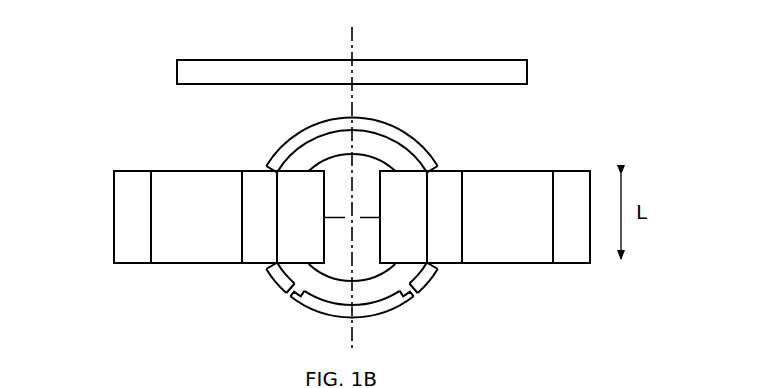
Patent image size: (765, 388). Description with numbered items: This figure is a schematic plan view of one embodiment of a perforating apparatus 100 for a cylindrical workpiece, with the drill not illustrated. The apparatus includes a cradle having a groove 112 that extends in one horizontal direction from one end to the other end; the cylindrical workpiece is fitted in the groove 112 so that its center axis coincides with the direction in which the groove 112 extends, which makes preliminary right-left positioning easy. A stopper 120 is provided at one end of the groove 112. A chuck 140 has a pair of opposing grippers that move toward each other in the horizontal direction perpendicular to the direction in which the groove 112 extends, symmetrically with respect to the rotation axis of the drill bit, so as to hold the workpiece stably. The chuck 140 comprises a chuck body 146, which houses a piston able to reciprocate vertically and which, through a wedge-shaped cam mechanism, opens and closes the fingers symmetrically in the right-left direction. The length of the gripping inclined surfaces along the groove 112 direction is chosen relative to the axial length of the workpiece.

The perforating apparatus 100 is at (114, 58).
The stopper 120 is at (527, 67).
The chuck 140 is at (135, 141).
The groove 112 is at (408, 161).
The chuck body 146 is at (429, 148).